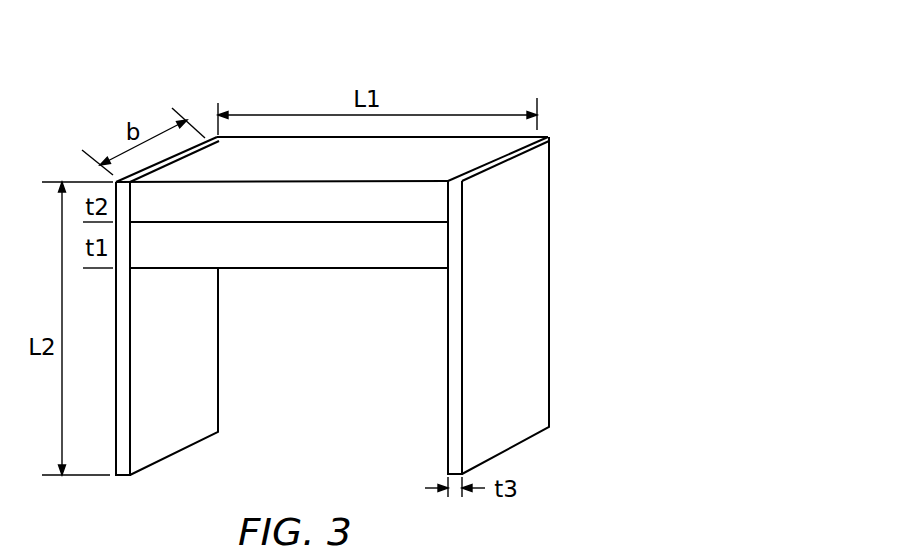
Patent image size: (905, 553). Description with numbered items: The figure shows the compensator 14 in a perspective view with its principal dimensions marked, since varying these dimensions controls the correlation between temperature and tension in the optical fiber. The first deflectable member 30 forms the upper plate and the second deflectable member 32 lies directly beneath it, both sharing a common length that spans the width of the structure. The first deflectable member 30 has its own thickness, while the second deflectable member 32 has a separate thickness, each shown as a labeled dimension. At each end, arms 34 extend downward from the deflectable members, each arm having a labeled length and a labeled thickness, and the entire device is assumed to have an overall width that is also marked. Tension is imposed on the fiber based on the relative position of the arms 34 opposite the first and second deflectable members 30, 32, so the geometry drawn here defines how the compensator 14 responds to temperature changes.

The compensator 14 is at (368, 244).
The first deflectable member 30 is at (297, 175).
The second deflectable member 32 is at (342, 260).
The arms 34 is at (205, 347).